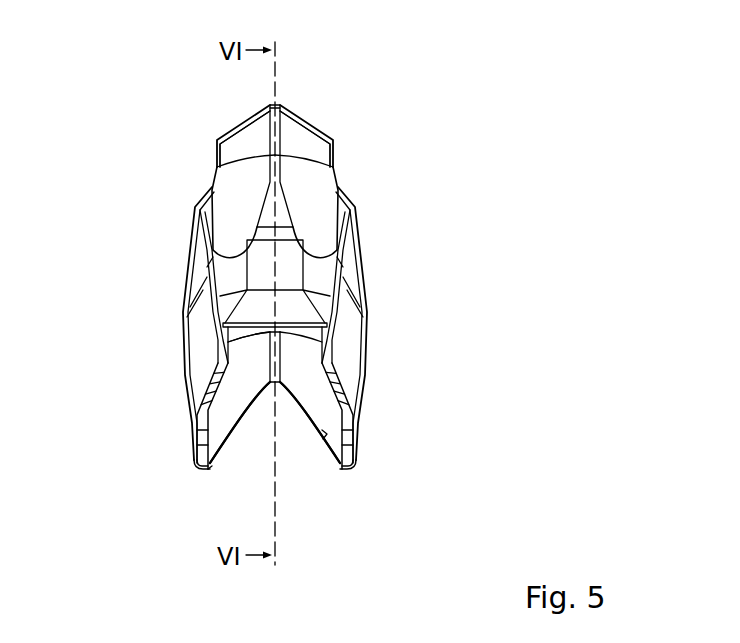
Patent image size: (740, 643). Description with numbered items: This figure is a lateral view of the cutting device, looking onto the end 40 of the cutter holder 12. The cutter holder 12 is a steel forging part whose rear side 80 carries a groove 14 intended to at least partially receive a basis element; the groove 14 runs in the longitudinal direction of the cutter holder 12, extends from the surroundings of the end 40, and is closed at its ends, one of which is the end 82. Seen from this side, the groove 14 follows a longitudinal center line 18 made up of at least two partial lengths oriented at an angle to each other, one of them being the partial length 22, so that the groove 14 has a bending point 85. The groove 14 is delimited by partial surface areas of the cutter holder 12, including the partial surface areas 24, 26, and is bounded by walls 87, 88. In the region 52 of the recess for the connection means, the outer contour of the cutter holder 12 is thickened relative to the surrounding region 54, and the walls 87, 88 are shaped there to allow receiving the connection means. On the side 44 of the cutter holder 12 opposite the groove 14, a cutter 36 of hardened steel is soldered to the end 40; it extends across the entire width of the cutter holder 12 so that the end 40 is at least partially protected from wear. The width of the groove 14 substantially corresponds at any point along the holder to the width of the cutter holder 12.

The cutter holder 12 is at (348, 327).
The groove 14 is at (287, 432).
The longitudinal center line 18 is at (273, 357).
The partial length 22 is at (323, 403).
The partial surface area 24 is at (325, 435).
The partial surface area 26 is at (193, 460).
The cutter 36 is at (305, 148).
The first end 40 is at (310, 193).
The side 44 is at (300, 105).
The region 52 is at (178, 322).
The surrounding region 54 is at (203, 249).
The rear side 80 is at (238, 495).
The end of groove 82 is at (246, 352).
The bending point 85 is at (215, 478).
The wall 87 is at (193, 433).
The wall 88 is at (350, 440).